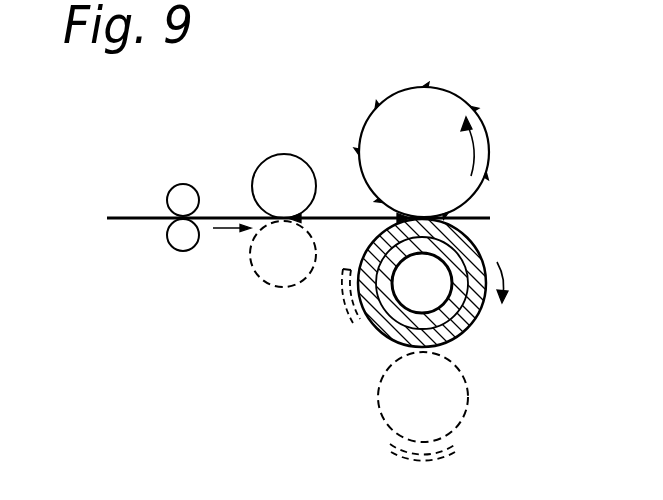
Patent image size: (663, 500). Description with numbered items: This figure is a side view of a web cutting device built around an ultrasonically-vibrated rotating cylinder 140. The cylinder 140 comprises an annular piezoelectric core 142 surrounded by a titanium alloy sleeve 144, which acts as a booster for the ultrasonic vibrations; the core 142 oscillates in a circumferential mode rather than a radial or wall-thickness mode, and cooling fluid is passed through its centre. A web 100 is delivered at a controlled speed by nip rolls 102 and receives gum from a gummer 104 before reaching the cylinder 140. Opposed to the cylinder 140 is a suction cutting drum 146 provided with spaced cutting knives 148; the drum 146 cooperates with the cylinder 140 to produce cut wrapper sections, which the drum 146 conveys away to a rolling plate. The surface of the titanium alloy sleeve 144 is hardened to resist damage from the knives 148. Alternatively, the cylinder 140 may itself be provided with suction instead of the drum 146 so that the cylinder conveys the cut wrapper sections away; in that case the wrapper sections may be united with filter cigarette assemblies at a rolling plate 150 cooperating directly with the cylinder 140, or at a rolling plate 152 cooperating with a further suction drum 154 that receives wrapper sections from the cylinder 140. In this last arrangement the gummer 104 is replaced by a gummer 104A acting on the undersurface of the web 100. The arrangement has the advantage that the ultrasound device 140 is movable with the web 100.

The web 100 is at (138, 221).
The nip rolls 102 is at (180, 190).
The gummer 104 is at (288, 168).
The gummer 104A is at (288, 288).
The ultrasonically-vibrated rotating cylinder 140 is at (497, 243).
The annular piezoelectric core 142 is at (435, 318).
The titanium alloy sleeve 144 is at (468, 322).
The suction cutting drum 146 is at (450, 195).
The cutting knives 148 is at (424, 87).
The rolling plate 150 is at (357, 330).
The rolling plate 152 is at (401, 448).
The further suction drum 154 is at (472, 405).